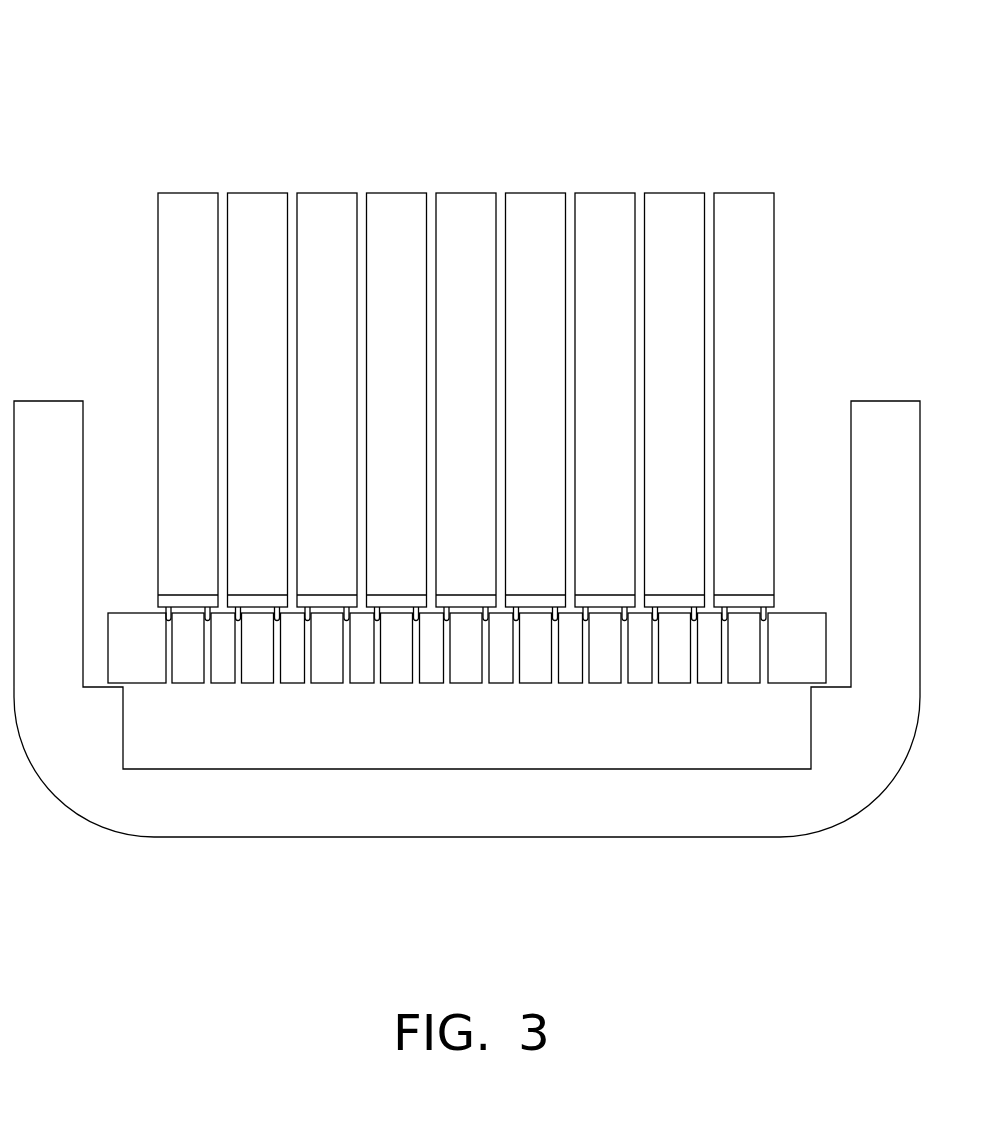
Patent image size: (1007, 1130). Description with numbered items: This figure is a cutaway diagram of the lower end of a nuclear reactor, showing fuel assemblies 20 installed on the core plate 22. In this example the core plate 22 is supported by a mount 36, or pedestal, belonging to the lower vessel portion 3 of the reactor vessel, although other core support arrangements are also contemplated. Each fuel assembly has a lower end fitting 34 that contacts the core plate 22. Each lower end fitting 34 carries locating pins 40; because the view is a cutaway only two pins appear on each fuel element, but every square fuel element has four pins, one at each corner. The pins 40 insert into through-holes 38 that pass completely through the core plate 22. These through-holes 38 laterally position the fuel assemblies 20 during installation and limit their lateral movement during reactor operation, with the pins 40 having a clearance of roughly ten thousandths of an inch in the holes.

The lower vessel portion 3 is at (467, 473).
The fuel assemblies 20 is at (744, 203).
The core plate 22 is at (146, 637).
The lower end fitting 34 is at (740, 600).
The mount 36 is at (109, 702).
The through-holes 38 is at (858, 728).
The locating pins 40 is at (446, 618).